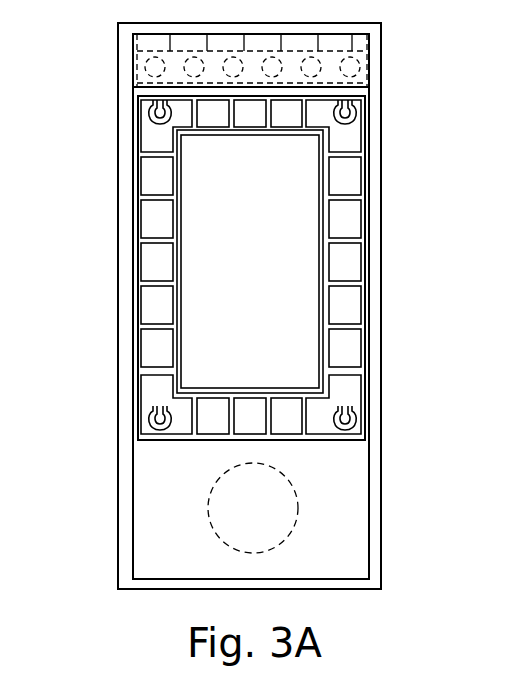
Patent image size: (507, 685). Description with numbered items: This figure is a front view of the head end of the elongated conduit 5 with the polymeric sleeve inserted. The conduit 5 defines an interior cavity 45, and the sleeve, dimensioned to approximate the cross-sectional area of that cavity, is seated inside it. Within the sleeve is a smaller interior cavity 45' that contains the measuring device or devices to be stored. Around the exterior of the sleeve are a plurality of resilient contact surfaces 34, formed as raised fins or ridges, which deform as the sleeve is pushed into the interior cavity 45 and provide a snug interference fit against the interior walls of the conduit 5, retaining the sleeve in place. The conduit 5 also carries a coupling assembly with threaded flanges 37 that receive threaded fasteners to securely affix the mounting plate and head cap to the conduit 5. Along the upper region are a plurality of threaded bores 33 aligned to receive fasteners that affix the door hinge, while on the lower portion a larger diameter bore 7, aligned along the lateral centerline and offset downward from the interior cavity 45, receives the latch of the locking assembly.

The elongated conduit 5 is at (383, 394).
The larger diameter bore 7 is at (283, 495).
The threaded bores 33 is at (350, 68).
The resilient contact surfaces 34 is at (347, 240).
The threaded flanges 37 is at (349, 109).
The interior cavity 45 is at (192, 267).
The smaller interior cavity 45' is at (329, 261).